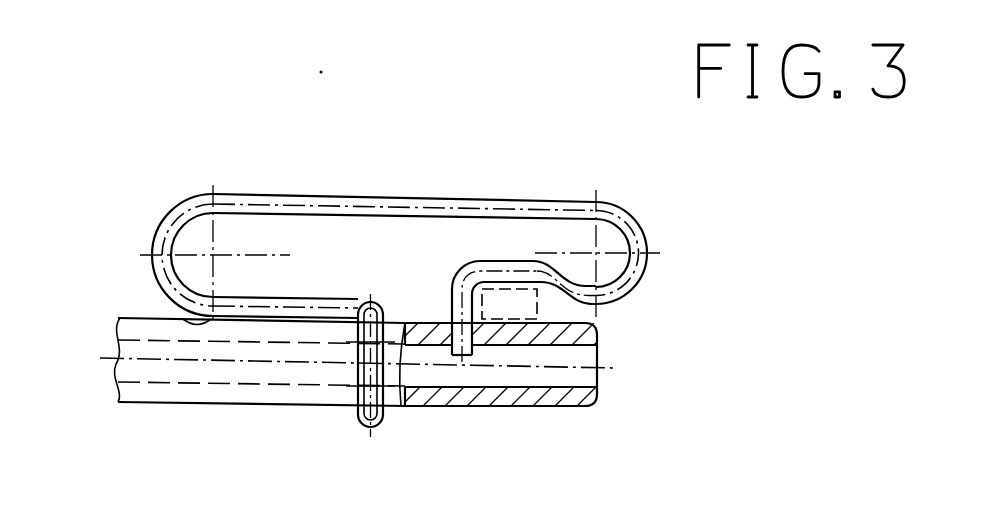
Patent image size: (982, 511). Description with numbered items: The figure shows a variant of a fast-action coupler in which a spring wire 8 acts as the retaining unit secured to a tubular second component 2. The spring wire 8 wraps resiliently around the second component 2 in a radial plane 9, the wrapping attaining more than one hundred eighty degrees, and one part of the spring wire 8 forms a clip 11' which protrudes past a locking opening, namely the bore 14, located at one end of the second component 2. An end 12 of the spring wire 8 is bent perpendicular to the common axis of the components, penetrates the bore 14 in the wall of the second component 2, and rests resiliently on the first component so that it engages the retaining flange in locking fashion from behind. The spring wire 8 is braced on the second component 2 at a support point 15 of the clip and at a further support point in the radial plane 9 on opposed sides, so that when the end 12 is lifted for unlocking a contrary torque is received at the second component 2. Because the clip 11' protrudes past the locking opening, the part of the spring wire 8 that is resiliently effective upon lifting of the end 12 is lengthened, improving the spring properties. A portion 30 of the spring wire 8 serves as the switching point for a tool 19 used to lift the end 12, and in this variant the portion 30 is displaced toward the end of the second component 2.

The spring wire 8 is at (54, 104).
The second component 2 is at (174, 403).
The radial plane 9 is at (368, 437).
The clip 11' is at (436, 217).
The end of the spring wire 12 is at (463, 356).
The bore 14 is at (440, 342).
The support point 15 is at (168, 318).
The tool 19 is at (527, 310).
The portion of the spring wire 30 is at (497, 268).